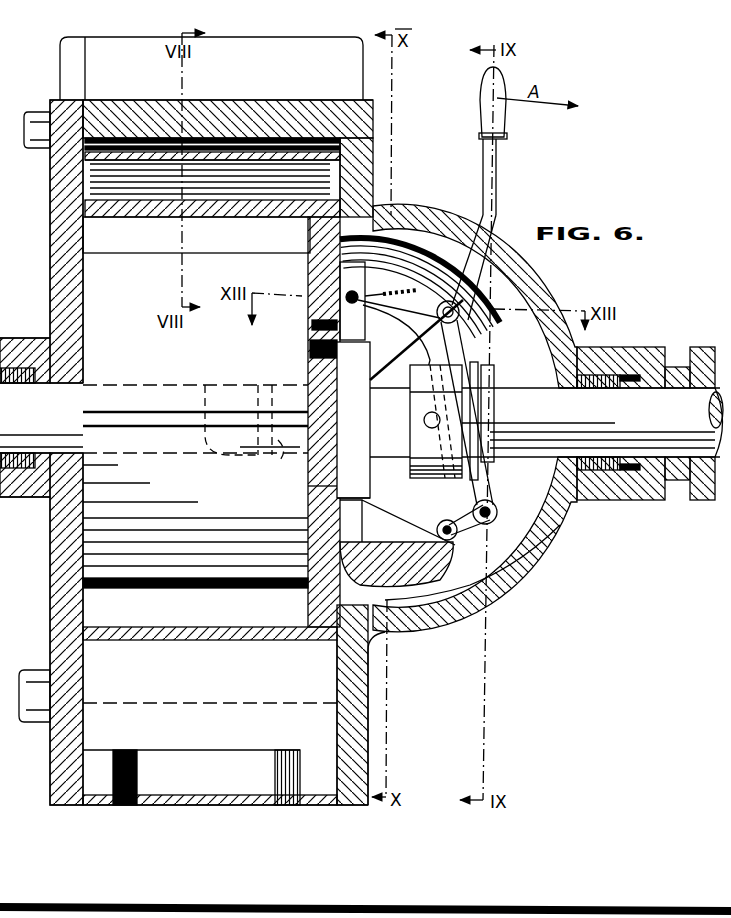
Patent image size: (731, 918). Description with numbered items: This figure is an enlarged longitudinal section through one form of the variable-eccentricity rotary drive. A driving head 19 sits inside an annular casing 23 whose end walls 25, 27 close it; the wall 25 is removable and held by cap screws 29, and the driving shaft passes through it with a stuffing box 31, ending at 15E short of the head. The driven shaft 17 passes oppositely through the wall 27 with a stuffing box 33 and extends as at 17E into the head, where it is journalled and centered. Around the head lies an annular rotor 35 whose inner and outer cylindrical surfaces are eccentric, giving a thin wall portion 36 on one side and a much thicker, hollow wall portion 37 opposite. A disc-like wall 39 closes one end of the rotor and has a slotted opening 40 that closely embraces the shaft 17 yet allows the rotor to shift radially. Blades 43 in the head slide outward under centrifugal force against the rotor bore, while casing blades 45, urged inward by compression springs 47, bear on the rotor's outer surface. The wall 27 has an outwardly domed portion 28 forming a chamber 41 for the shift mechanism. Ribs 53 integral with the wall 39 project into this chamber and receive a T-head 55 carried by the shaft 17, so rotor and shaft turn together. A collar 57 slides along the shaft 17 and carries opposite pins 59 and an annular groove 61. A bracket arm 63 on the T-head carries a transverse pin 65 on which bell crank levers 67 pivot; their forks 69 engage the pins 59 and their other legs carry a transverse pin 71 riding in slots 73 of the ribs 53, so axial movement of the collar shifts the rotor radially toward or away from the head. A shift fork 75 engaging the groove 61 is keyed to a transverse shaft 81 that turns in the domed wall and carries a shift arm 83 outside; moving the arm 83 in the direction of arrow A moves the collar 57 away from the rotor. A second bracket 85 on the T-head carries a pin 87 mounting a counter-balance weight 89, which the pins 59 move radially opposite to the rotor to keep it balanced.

The end of driving shaft 15E is at (227, 436).
The driven shaft 17 is at (577, 500).
The extension of driven shaft 17E is at (271, 436).
The driving head 19 is at (95, 285).
The annular casing 23 is at (193, 117).
The end wall 25 is at (67, 215).
The end wall 27 is at (362, 178).
The domed portion 28 is at (527, 290).
The cap screws 29 is at (40, 113).
The stuffing box 31 is at (17, 392).
The stuffing box 33 is at (613, 353).
The annular rotor 35 is at (347, 163).
The thin wall portion 36 is at (176, 632).
The thicker wall portion 37 is at (240, 188).
The disc-like wall 39 is at (320, 525).
The slotted opening 40 is at (310, 488).
The chamber 41 is at (505, 285).
The blades 43 is at (105, 237).
The inwardly sliding blades 45 is at (90, 652).
The compression springs 47 is at (140, 773).
The ribs 53 is at (337, 325).
The T-head 55 is at (345, 378).
The collar 57 is at (410, 393).
The pins 59 is at (420, 440).
The annular groove 61 is at (470, 364).
The bracket arm 63 is at (330, 350).
The transverse pin 65 is at (458, 305).
The bell crank levers 67 is at (404, 294).
The forks 69 is at (424, 418).
The transverse pin 71 is at (346, 295).
The slots 73 is at (410, 340).
The shift fork 75 is at (490, 487).
The transverse shaft 81 is at (497, 510).
The shift arm 83 is at (498, 185).
The second bracket 85 is at (420, 508).
The pin 87 is at (435, 530).
The counter-balance weight 89 is at (427, 577).